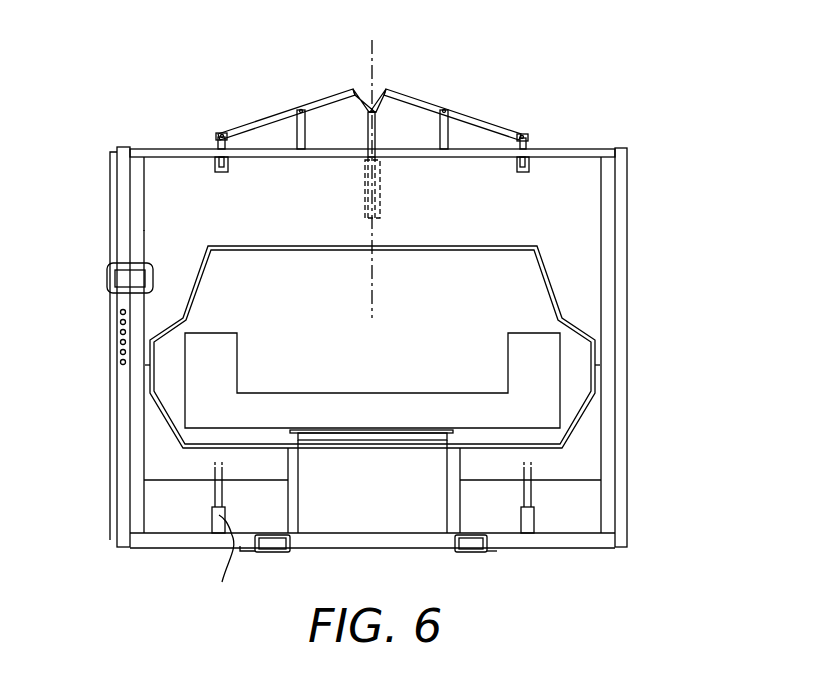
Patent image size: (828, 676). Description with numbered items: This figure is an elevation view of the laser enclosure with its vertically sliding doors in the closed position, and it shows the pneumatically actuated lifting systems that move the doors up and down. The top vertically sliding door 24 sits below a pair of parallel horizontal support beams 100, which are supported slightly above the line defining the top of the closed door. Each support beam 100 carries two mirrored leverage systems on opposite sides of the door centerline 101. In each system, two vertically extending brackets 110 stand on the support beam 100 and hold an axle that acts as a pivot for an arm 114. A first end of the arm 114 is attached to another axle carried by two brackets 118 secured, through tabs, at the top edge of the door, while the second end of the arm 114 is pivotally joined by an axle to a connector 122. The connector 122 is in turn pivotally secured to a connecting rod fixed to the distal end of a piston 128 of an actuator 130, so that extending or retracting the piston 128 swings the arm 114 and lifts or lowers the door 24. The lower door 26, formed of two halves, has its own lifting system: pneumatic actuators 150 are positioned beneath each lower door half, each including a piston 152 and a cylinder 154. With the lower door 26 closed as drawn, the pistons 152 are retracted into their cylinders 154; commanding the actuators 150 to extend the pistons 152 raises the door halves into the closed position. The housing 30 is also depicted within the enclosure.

The horizontal support beam 100 is at (610, 150).
The top vertically sliding door 24 is at (568, 204).
The optical housing 30 is at (515, 281).
The lower door 26 is at (580, 454).
The central axis 101 is at (368, 48).
The vertically extending bracket 110 is at (299, 110).
The arm 114 is at (260, 122).
The bracket 118 is at (218, 137).
The connector 122 is at (358, 92).
The piston 128 is at (377, 133).
The actuator 130 is at (365, 185).
The pneumatic actuator 150 is at (212, 518).
The piston 152 is at (213, 491).
The cylinder 154 is at (221, 567).